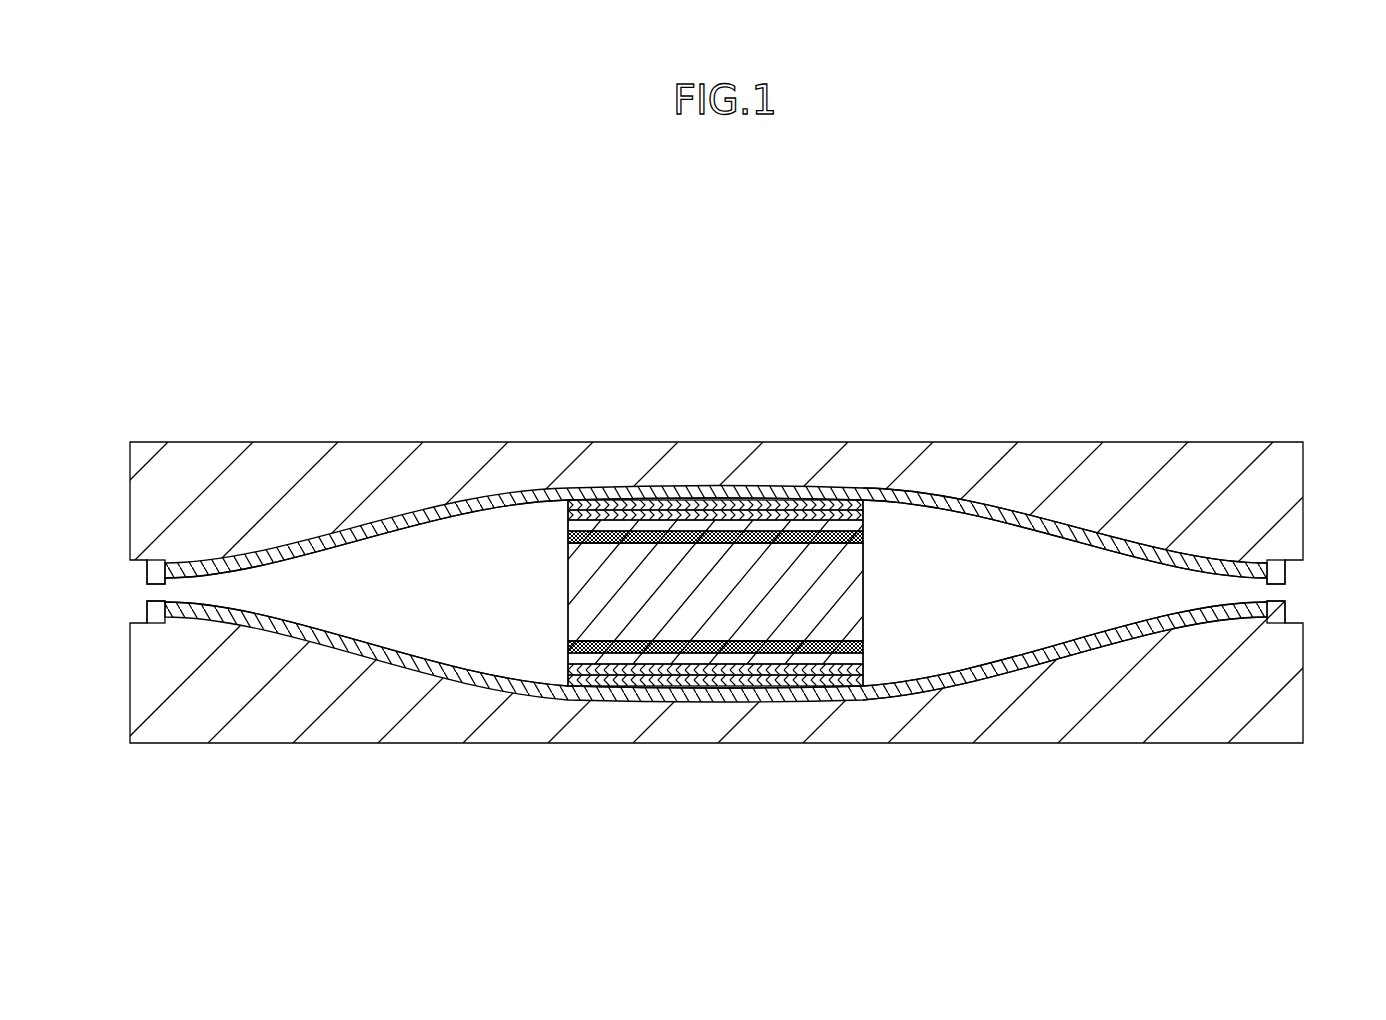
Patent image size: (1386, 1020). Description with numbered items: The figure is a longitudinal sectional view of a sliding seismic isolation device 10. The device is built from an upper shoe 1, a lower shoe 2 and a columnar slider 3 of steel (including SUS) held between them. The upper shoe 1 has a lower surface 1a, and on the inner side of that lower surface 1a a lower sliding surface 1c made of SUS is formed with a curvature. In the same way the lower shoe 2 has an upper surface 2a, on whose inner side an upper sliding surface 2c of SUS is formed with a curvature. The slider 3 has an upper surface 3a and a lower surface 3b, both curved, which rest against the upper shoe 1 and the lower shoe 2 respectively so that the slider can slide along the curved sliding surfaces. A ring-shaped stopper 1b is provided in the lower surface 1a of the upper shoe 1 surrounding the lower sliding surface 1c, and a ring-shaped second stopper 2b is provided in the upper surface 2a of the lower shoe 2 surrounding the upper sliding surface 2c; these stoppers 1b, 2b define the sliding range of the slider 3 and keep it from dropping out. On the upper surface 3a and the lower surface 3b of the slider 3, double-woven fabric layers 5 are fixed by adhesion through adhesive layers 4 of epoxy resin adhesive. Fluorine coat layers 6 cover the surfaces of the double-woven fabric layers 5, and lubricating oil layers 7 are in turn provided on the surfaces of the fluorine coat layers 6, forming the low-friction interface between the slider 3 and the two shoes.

The sliding seismic isolation device 10 is at (1195, 286).
The upper shoe 1 is at (1283, 478).
The lower surface of the upper shoe 1a is at (396, 516).
The ring-shaped stopper 1b is at (150, 572).
The lower sliding surface 1c is at (1080, 520).
The lower shoe 2 is at (1283, 706).
The upper surface of the lower shoe 2a is at (398, 668).
The ring-shaped second stopper 2b is at (150, 609).
The upper sliding surface 2c is at (1076, 662).
The columnar slider 3 is at (842, 593).
The upper surface of the slider 3a is at (735, 526).
The lower surface of the slider 3b is at (690, 688).
The adhesive layer 4 is at (568, 542).
The double-woven fabric layer 5 is at (853, 530).
The fluorine coat layer 6 is at (568, 518).
The lubricating oil layer 7 is at (865, 510).